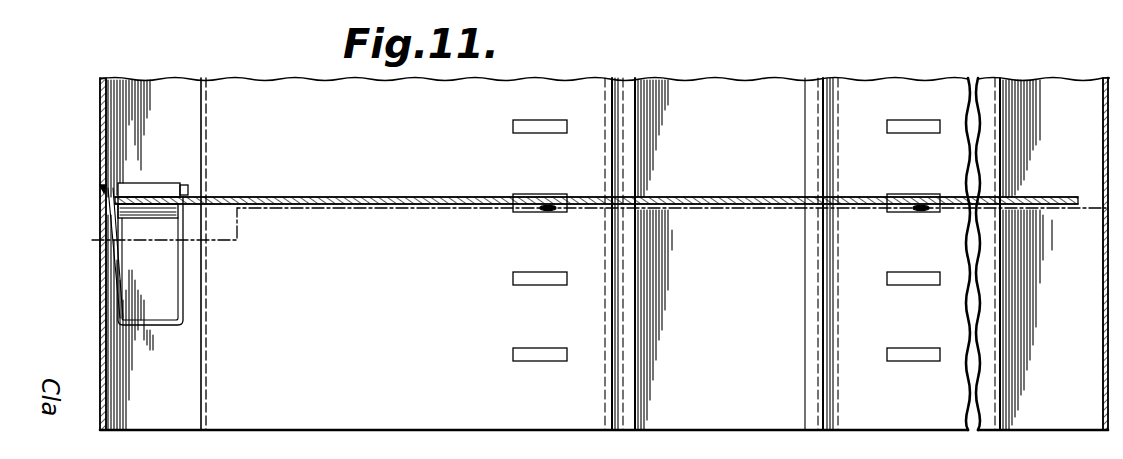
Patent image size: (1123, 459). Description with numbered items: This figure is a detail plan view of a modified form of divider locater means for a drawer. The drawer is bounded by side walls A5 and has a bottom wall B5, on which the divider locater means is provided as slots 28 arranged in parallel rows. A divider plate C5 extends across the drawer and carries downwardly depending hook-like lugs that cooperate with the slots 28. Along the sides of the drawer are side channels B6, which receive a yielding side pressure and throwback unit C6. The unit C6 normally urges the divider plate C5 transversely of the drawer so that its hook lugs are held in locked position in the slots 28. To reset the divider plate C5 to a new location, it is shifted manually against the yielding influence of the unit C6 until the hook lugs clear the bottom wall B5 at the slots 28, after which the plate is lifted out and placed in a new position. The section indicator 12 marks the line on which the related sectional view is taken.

The side walls A5 is at (1102, 100).
The side channels B6 is at (187, 382).
The bottom wall B5 is at (621, 254).
The section line 12 is at (88, 222).
The divider plate C5 is at (416, 197).
The yielding side pressure and throwback unit C6 is at (140, 215).
The slots 28 is at (552, 131).